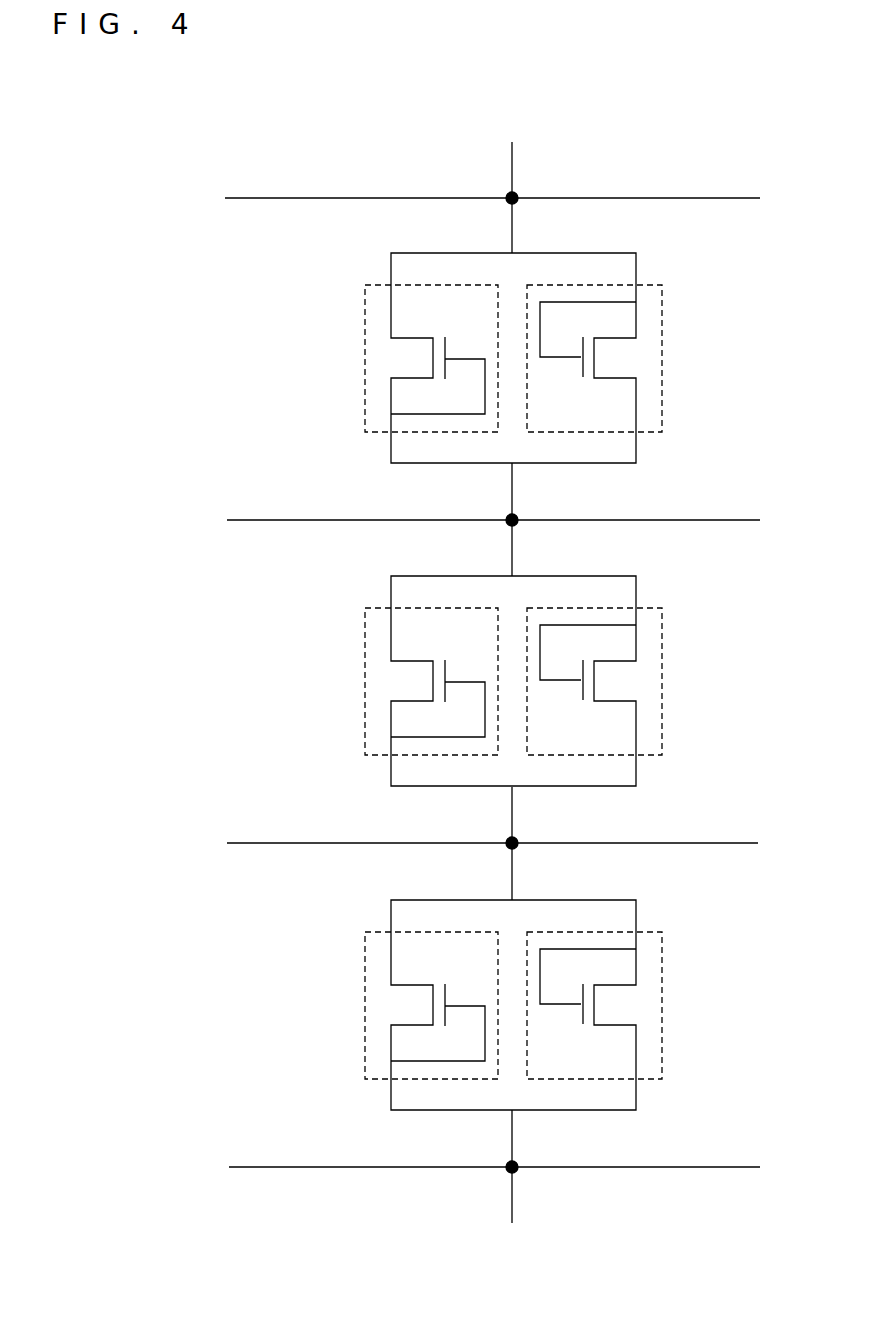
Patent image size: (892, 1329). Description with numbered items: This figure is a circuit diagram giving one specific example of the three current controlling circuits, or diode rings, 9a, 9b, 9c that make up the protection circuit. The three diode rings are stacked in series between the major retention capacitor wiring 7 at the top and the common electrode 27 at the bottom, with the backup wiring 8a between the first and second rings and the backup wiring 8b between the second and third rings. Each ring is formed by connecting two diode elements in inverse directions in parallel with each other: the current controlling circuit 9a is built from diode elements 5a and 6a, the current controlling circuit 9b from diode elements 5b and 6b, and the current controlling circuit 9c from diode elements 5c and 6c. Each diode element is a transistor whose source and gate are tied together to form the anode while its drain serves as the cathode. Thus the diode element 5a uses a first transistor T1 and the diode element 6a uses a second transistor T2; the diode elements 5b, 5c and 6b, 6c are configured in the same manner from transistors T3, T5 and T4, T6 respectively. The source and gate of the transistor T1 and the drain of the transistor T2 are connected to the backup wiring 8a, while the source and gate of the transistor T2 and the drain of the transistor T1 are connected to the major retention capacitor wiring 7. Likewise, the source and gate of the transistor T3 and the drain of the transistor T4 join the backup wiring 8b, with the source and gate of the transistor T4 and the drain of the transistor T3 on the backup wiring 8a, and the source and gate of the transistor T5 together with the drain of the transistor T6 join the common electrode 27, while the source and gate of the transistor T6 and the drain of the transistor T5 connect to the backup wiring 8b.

The major retention capacitor wiring 7 is at (268, 197).
The backup wiring 8a is at (270, 519).
The backup wiring 8b is at (271, 842).
The common electrode 27 is at (273, 1166).
The current controlling circuit 9a is at (691, 260).
The current controlling circuit 9b is at (534, 674).
The current controlling circuit 9c is at (533, 998).
The diode element 5a is at (365, 359).
The diode element 5b is at (400, 681).
The diode element 5c is at (400, 1005).
The diode element 6a is at (662, 361).
The diode element 6b is at (628, 681).
The diode element 6c is at (627, 1005).
The transistor T1 is at (413, 338).
The transistor T2 is at (618, 378).
The transistor T3 is at (438, 682).
The transistor T4 is at (588, 683).
The transistor T5 is at (438, 1006).
The transistor T6 is at (588, 1007).